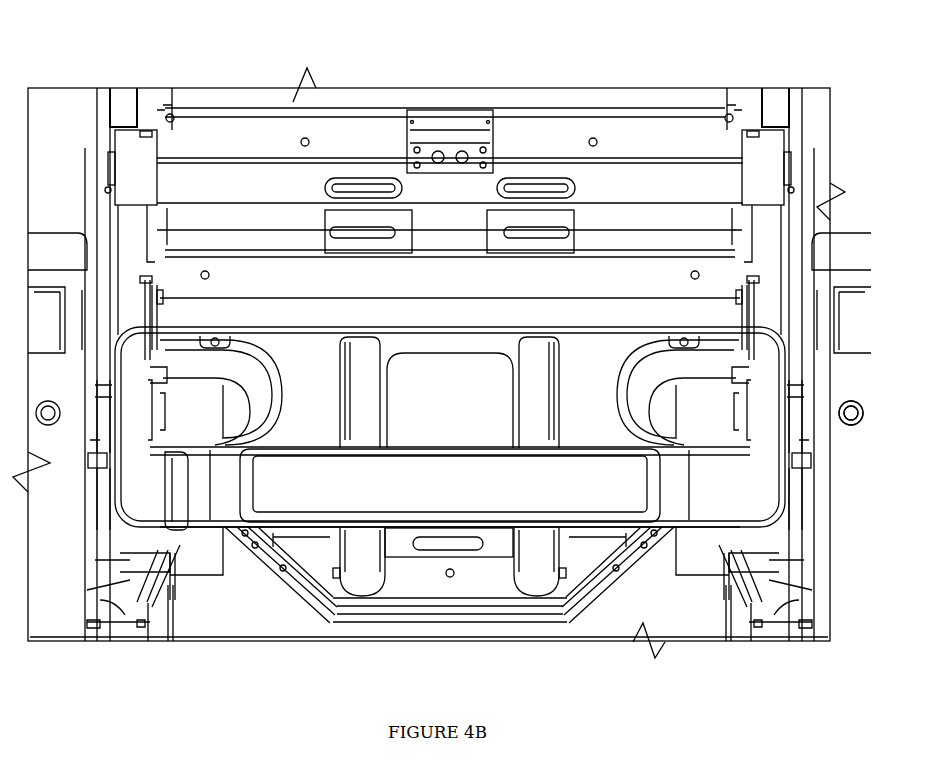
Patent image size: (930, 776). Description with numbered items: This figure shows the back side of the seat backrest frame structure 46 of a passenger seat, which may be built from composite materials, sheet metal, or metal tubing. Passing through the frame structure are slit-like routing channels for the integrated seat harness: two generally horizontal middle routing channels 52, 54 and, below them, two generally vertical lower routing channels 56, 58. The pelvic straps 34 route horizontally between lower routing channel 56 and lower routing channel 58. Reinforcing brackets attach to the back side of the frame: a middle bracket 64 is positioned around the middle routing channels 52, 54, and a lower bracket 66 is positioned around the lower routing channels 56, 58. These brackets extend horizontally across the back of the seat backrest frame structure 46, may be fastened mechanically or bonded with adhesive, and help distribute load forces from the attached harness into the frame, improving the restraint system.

The seat backrest frame structure 46 is at (100, 82).
The middle bracket 64 is at (232, 175).
The middle routing channel 54 is at (350, 180).
The middle routing channel 52 is at (530, 185).
The pelvic straps 34 is at (430, 470).
The lower bracket 66 is at (192, 462).
The lower routing channel 58 is at (246, 495).
The lower routing channel 56 is at (650, 492).